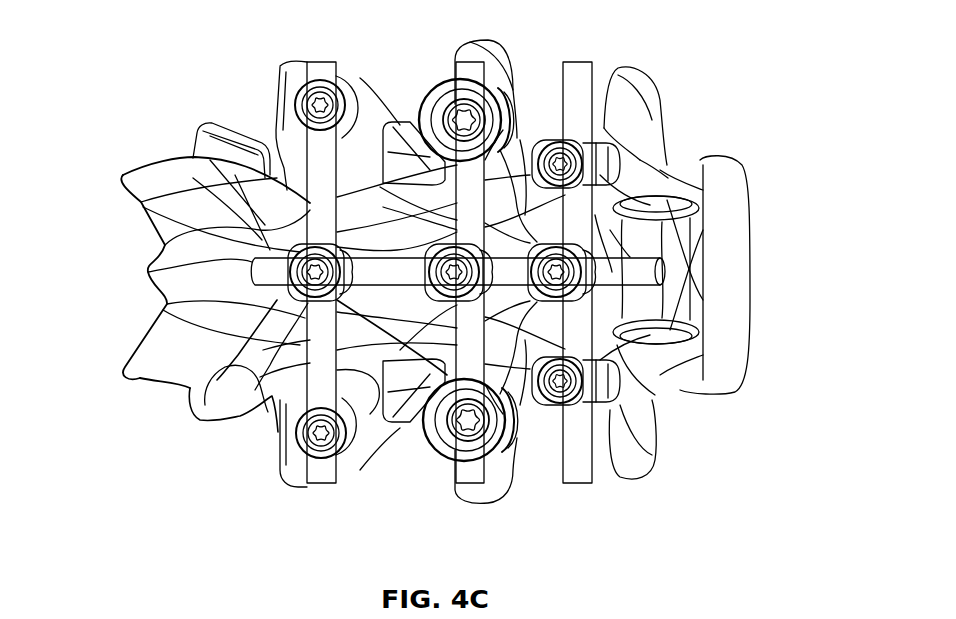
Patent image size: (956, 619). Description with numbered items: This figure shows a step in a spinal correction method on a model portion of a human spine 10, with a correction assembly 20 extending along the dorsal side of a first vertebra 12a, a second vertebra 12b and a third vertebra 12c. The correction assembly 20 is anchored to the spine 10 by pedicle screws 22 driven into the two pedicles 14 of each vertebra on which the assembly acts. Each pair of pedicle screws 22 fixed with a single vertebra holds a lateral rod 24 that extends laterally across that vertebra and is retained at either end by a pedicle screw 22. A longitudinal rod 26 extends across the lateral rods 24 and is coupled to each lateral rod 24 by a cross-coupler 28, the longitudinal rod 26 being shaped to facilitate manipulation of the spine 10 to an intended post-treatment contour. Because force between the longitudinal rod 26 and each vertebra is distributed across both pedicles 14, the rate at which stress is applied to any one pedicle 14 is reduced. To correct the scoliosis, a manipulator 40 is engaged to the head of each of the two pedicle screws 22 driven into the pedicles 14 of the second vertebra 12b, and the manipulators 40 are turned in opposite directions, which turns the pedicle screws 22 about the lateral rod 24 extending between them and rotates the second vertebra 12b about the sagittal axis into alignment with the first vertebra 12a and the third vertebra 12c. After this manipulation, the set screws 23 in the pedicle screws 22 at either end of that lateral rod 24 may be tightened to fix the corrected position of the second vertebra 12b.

The spine 10 is at (149, 402).
The first vertebra 12a is at (160, 398).
The second vertebra 12b is at (400, 128).
The third vertebra 12c is at (738, 282).
The pedicle 14 is at (277, 80).
The correction assembly 20 is at (663, 174).
The pedicle screw 22 is at (293, 116).
The set screw 23 is at (307, 80).
The lateral rod 24 is at (210, 138).
The longitudinal rod 26 is at (300, 200).
The cross-coupler 28 is at (307, 327).
The manipulator 40 is at (620, 73).